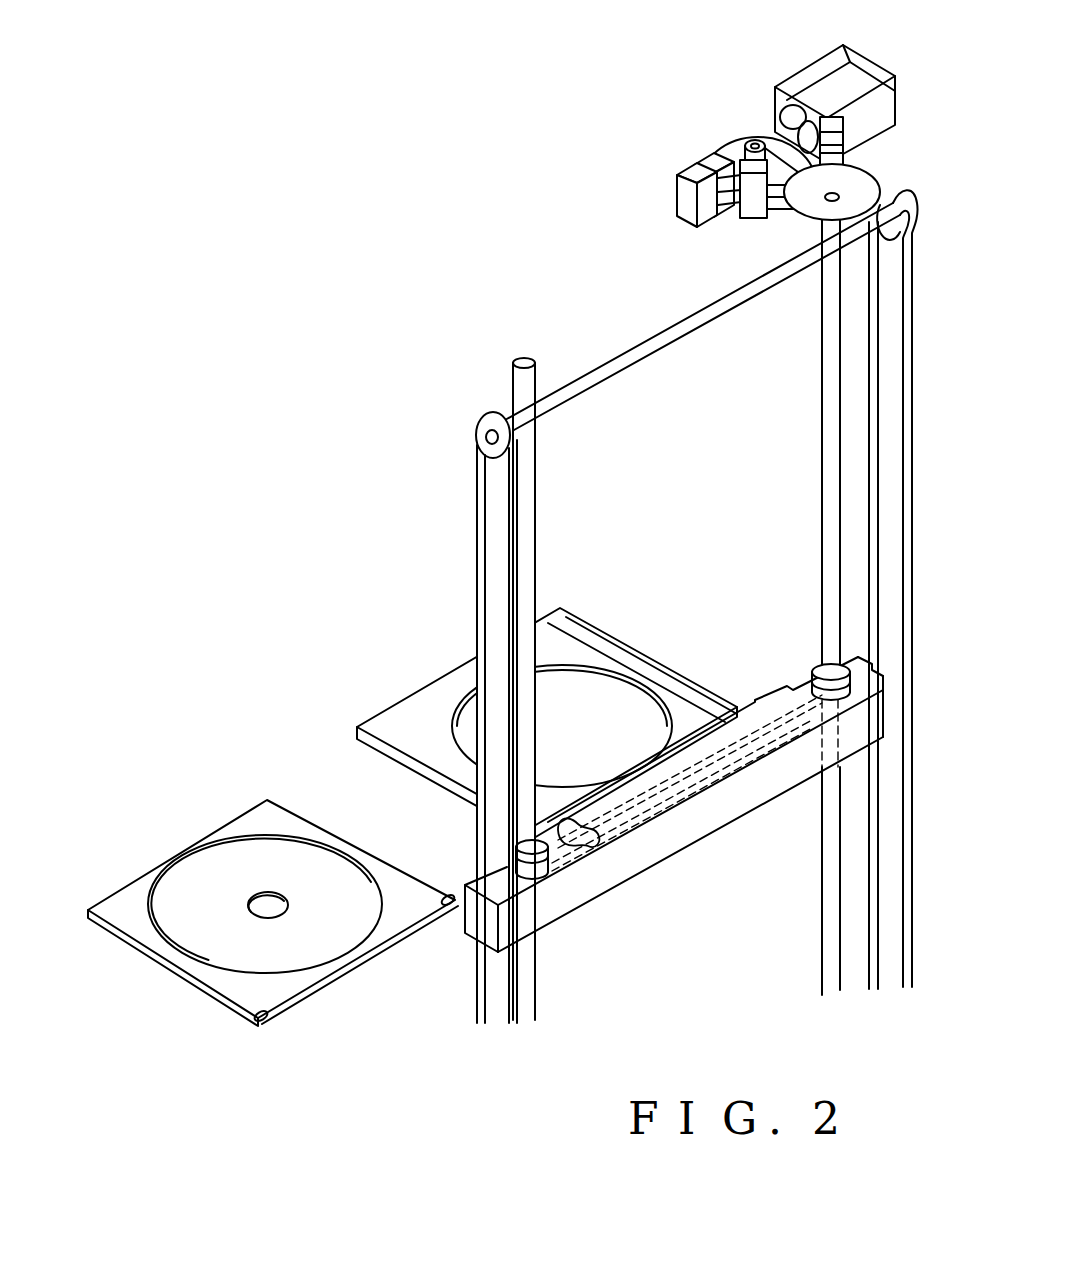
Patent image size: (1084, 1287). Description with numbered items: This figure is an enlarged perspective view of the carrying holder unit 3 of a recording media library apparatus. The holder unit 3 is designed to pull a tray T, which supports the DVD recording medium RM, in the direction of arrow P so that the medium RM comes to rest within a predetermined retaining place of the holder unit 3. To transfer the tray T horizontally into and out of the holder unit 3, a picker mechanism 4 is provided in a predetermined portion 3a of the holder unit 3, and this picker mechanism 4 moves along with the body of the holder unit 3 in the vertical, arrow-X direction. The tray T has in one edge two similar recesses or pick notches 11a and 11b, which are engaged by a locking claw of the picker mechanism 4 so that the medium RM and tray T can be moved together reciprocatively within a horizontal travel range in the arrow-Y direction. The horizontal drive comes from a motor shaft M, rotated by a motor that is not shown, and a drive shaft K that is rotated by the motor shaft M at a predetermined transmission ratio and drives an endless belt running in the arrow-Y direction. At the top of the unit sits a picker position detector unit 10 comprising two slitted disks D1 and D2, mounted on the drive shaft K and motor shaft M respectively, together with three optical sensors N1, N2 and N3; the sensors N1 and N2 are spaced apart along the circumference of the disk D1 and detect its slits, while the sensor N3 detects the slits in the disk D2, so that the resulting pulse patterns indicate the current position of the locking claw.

The picker position detector unit 10 is at (771, 151).
The slitted disk D2 is at (737, 143).
The motor shaft M is at (756, 141).
The optical sensor N1 is at (835, 115).
The slitted disk D1 is at (857, 181).
The optical sensor N3 is at (678, 194).
The optical sensor N2 is at (755, 208).
The drive shaft K is at (823, 355).
The carrying holder unit 3 is at (726, 677).
The predetermined portion of the holder unit 3a is at (734, 803).
The picker mechanism 4 is at (557, 876).
The DVD recording medium RM is at (202, 860).
The tray T is at (273, 944).
The recess (pick notch) 11a is at (263, 1013).
The recess (pick notch) 11b is at (447, 906).
The arrow-X direction X is at (449, 580).
The arrow-Y direction Y is at (728, 873).
The arrow P direction P is at (275, 796).